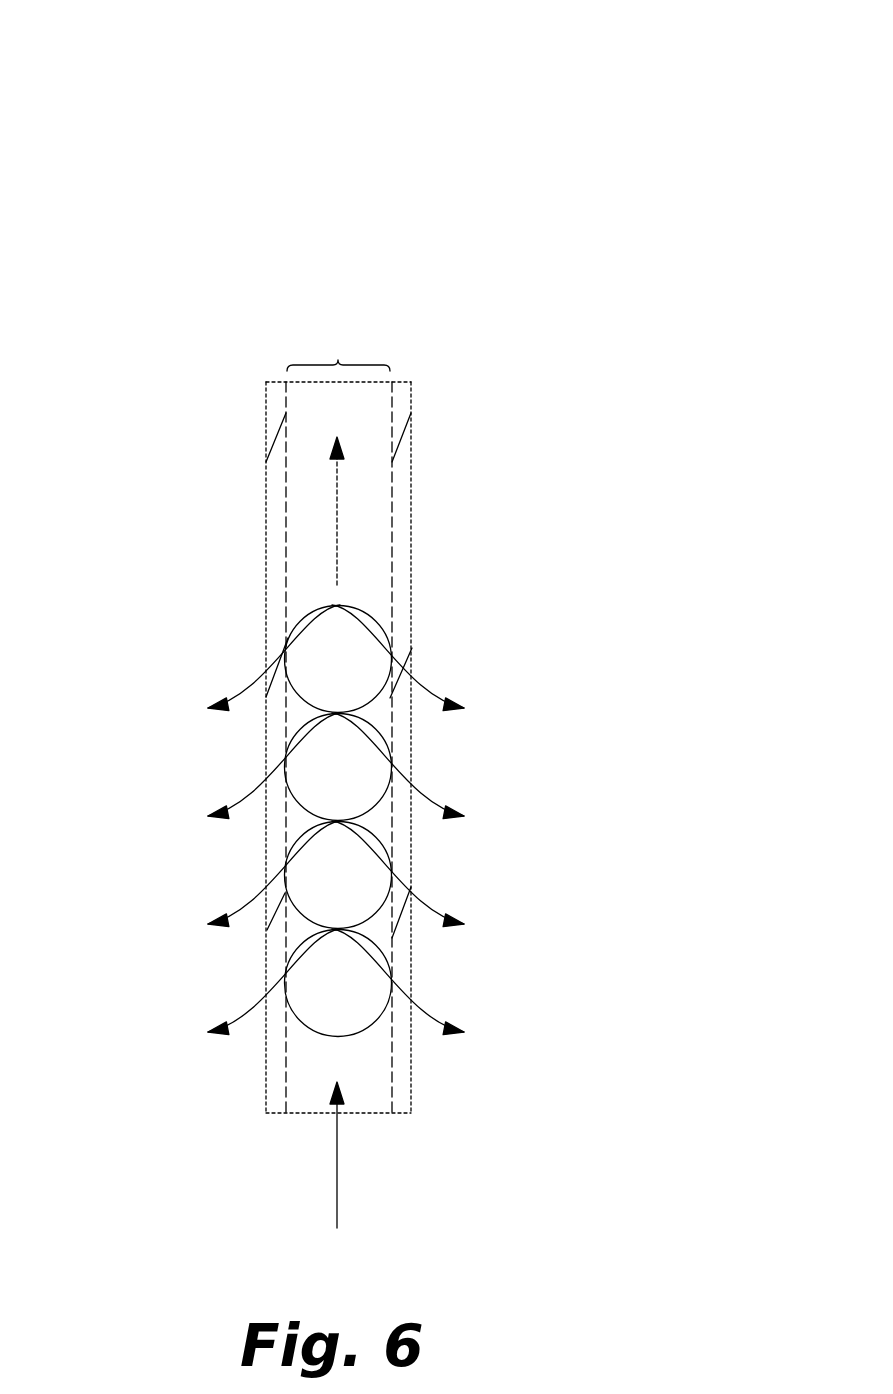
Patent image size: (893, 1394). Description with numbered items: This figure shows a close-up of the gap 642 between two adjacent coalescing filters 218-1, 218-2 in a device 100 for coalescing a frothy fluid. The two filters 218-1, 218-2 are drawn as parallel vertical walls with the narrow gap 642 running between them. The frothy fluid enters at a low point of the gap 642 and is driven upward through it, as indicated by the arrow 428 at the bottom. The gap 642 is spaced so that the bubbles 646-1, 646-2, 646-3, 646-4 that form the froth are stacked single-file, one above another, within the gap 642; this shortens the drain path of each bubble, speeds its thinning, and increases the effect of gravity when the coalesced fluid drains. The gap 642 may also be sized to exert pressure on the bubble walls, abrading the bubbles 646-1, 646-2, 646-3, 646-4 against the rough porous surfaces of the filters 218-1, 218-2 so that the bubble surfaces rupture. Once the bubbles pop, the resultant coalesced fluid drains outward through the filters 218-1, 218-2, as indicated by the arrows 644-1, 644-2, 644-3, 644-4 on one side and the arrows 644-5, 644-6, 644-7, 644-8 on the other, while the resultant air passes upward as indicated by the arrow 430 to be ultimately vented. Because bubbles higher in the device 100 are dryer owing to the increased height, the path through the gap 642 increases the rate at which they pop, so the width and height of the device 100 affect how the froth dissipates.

The device 100 is at (174, 92).
The coalescing filter 218-1 is at (266, 497).
The coalescing filter 218-2 is at (412, 453).
The gap 642 is at (340, 362).
The arrow 430 is at (338, 473).
The arrow 428 is at (338, 1120).
The bubble 646-1 is at (373, 963).
The bubble 646-2 is at (373, 855).
The bubble 646-3 is at (373, 748).
The bubble 646-4 is at (362, 636).
The arrow 644-1 is at (262, 680).
The arrow 644-2 is at (255, 792).
The arrow 644-3 is at (255, 902).
The arrow 644-4 is at (255, 1008).
The arrow 644-5 is at (425, 693).
The arrow 644-6 is at (418, 797).
The arrow 644-7 is at (418, 903).
The arrow 644-8 is at (418, 1010).